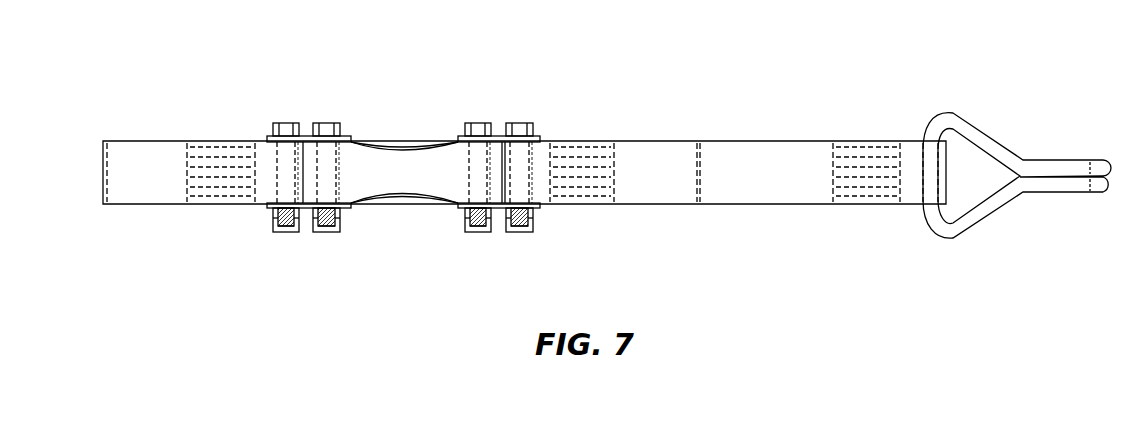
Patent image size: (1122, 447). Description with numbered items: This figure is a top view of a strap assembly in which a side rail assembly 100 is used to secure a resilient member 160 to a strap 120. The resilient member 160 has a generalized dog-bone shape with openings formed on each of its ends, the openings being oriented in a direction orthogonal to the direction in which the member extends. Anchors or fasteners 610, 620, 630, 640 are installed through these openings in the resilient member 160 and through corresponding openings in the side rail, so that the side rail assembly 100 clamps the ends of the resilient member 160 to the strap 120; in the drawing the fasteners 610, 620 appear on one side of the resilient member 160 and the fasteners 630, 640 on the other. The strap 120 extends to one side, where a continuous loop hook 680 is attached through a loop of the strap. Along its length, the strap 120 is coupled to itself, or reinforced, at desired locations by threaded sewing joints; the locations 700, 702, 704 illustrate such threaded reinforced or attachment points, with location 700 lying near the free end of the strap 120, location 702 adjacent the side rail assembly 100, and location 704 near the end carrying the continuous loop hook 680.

The side rail assembly 100 is at (254, 122).
The strap 120 is at (655, 141).
The resilient member 160 is at (363, 150).
The fastener 610 is at (287, 232).
The fastener 620 is at (324, 232).
The fastener 630 is at (482, 232).
The fastener 640 is at (521, 232).
The continuous loop hook 680 is at (983, 128).
The threaded reinforced or attachment point 700 is at (197, 210).
The threaded reinforced or attachment point 702 is at (587, 212).
The threaded reinforced or attachment point 704 is at (860, 213).